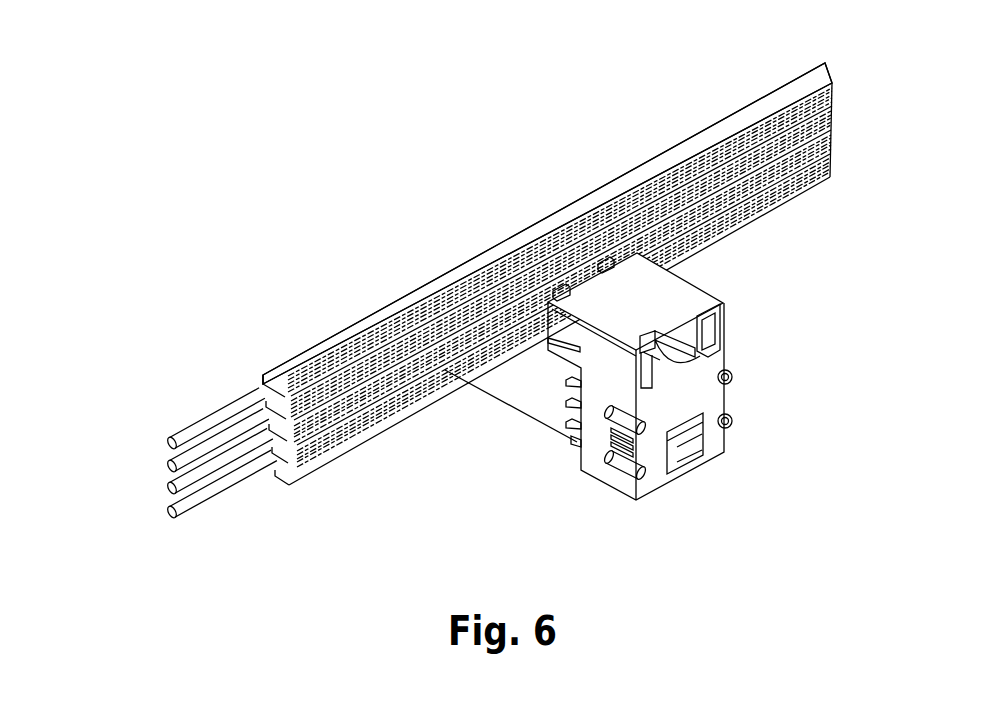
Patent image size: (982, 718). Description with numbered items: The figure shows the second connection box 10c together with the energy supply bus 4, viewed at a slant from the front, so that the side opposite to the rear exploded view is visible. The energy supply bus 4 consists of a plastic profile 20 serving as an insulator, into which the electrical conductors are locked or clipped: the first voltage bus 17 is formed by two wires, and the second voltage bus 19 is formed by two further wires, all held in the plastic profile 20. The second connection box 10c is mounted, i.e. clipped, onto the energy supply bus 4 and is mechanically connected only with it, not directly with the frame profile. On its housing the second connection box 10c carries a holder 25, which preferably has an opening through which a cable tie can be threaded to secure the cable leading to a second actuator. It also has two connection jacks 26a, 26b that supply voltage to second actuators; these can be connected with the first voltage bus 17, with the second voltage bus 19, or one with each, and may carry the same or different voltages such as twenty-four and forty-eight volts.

The energy supply bus 4 is at (432, 272).
The plastic profile 20 is at (300, 360).
The first voltage bus 17 is at (154, 440).
The second voltage bus 19 is at (154, 486).
The second connection box 10c is at (713, 448).
The holder 25 is at (692, 452).
The connection jack 26a is at (663, 370).
The connection jack 26b is at (715, 327).